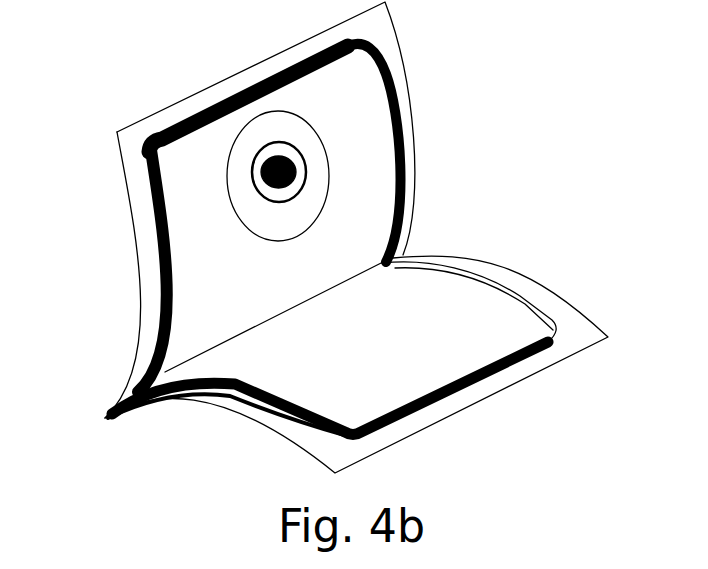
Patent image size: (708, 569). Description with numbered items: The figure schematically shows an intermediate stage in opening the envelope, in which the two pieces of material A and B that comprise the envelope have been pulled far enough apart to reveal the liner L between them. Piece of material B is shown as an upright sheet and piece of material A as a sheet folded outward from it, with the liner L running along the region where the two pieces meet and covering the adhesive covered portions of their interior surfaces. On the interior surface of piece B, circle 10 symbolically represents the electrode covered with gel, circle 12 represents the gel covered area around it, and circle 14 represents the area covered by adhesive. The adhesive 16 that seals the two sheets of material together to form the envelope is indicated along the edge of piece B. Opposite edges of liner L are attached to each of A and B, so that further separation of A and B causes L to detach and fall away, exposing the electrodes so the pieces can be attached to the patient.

The electrode covered with gel 10 is at (260, 173).
The gel covered area 12 is at (252, 193).
The area covered by adhesive 14 is at (238, 226).
The adhesive 16 is at (150, 137).
The piece of material A is at (583, 318).
The piece of material B is at (152, 112).
The liner L is at (427, 257).